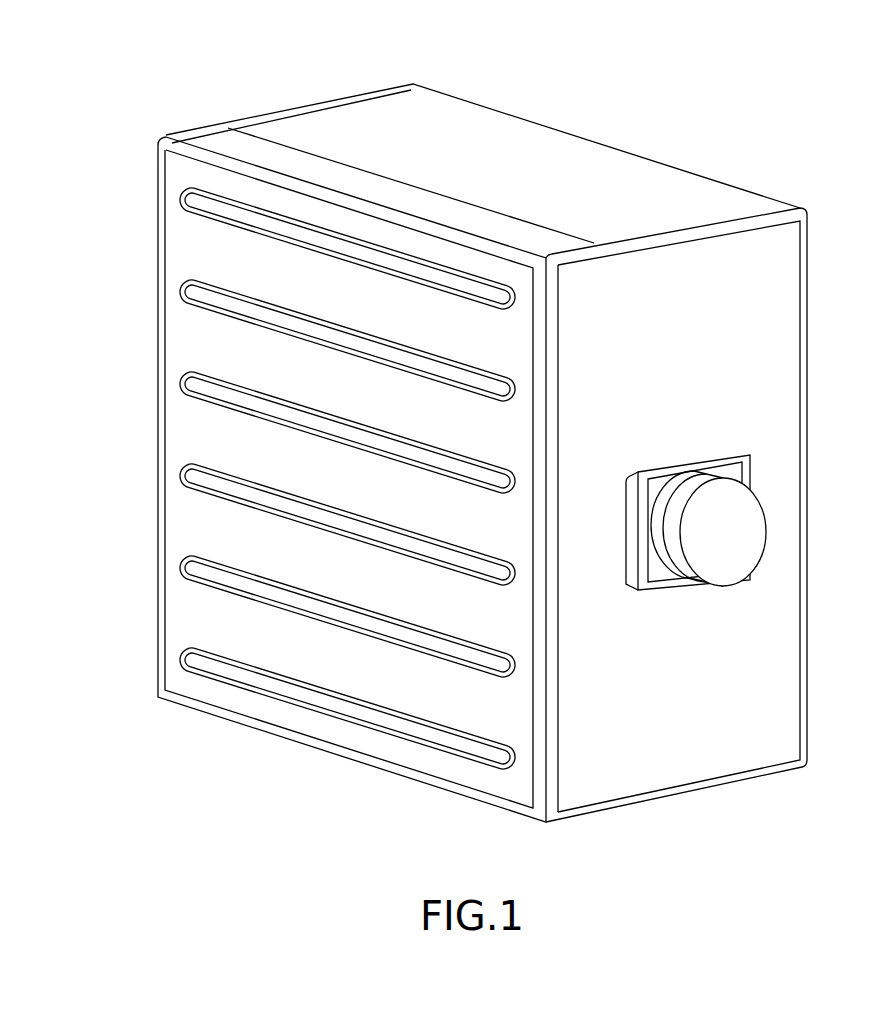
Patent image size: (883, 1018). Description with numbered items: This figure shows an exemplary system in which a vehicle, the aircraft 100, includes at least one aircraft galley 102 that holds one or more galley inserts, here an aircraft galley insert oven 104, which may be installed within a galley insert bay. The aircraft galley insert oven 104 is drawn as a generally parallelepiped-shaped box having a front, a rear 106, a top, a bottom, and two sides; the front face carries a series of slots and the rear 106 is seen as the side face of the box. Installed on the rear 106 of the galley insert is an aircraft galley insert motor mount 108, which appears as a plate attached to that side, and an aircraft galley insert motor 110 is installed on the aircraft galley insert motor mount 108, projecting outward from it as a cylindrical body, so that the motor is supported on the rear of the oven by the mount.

The aircraft 100 is at (87, 45).
The aircraft galley 102 is at (134, 114).
The aircraft galley insert oven 104 is at (552, 139).
The rear 106 is at (790, 372).
The aircraft galley insert motor mount 108 is at (746, 461).
The aircraft galley insert motor 110 is at (757, 528).